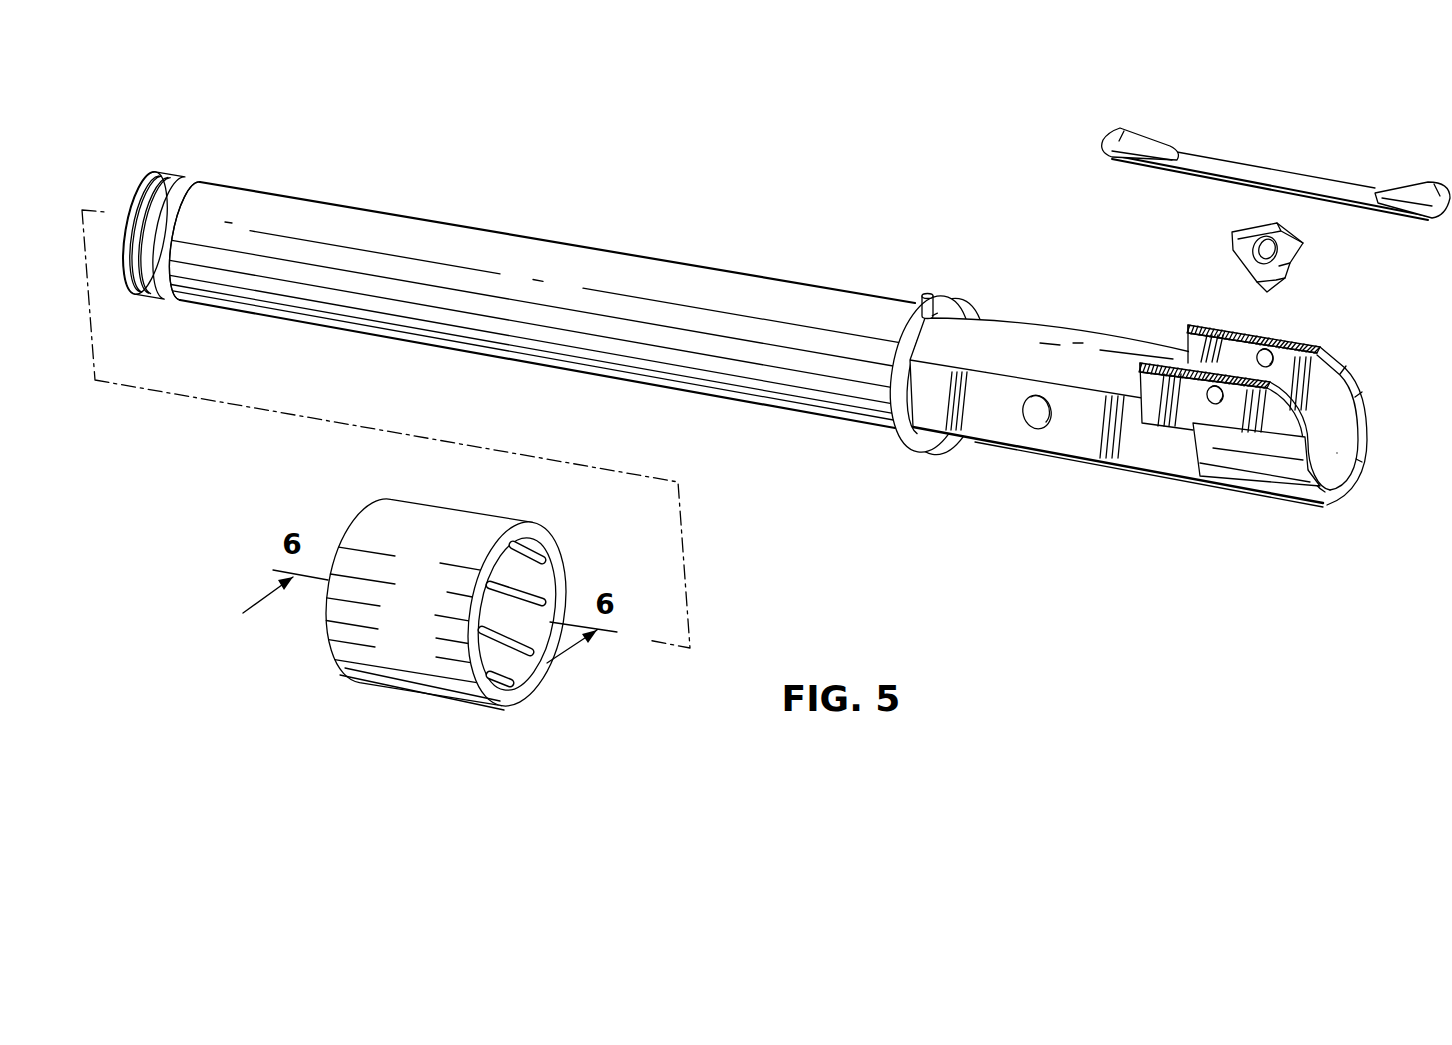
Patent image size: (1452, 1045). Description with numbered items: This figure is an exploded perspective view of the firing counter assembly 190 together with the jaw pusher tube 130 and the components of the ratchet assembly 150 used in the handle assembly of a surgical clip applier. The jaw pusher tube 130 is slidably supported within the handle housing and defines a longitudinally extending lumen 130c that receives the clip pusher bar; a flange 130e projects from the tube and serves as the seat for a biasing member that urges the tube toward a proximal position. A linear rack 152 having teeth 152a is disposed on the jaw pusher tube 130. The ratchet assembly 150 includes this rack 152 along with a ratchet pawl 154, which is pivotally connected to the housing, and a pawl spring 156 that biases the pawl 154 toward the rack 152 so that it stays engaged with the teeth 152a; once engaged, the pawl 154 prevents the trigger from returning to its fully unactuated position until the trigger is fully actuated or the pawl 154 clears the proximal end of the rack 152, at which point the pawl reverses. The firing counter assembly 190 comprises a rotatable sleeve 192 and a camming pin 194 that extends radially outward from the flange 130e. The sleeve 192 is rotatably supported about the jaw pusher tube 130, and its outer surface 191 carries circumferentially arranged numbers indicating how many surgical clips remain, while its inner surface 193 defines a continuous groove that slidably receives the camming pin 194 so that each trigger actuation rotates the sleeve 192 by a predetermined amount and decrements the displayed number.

The jaw pusher tube 130 is at (705, 275).
The flange 130e is at (960, 305).
The lumen 130c is at (1337, 453).
The camming pin 194 is at (929, 291).
The firing counter assembly 190 is at (672, 670).
The ratchet assembly 150 is at (1318, 305).
The linear rack 152 is at (1267, 386).
The teeth 152a is at (1204, 314).
The ratchet pawl 154 is at (1307, 245).
The pawl spring 156 is at (1203, 165).
The outer surface 191 is at (476, 613).
The rotatable sleeve 192 is at (357, 673).
The inner surface 193 is at (545, 577).